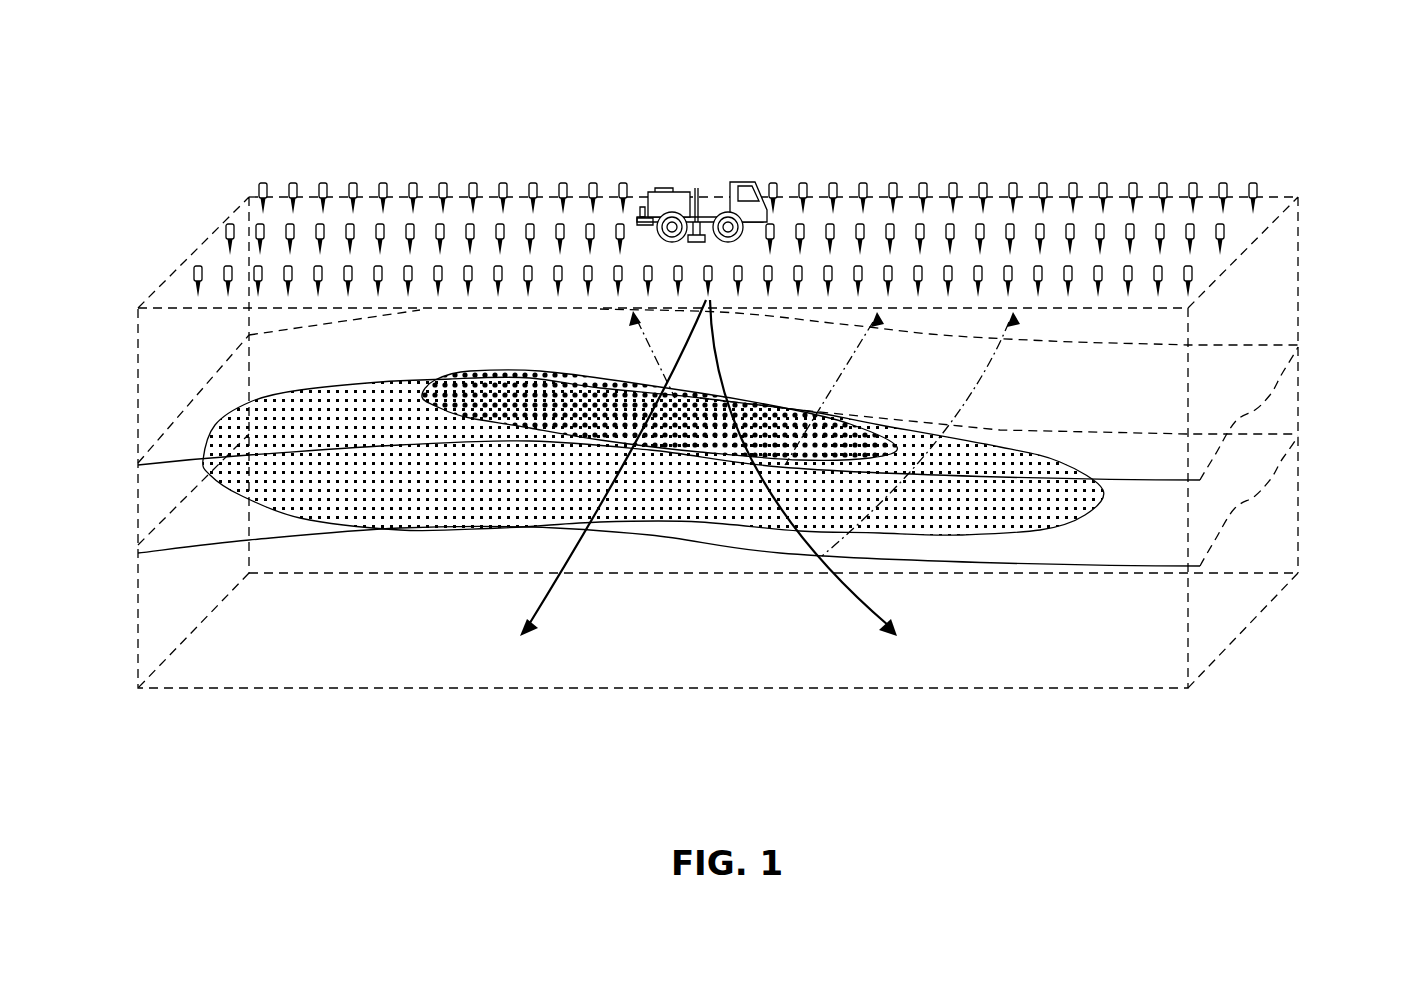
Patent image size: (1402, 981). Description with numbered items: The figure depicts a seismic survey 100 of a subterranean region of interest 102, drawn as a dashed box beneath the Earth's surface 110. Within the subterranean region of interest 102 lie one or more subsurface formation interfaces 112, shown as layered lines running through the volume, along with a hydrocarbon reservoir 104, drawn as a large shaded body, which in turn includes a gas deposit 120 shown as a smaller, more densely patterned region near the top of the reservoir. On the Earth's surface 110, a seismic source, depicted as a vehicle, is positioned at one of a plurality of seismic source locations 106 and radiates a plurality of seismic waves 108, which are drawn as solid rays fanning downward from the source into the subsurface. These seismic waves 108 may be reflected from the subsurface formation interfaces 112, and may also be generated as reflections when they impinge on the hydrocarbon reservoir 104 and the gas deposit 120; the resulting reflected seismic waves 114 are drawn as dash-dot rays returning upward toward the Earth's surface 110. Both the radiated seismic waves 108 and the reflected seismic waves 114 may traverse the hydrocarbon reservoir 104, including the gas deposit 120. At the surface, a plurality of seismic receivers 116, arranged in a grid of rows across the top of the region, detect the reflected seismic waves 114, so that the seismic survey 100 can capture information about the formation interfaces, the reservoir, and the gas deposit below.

The seismic survey 100 is at (1302, 103).
The subterranean region of interest 102 is at (1125, 652).
The hydrocarbon reservoir 104 is at (1058, 495).
The seismic source location 106 is at (670, 187).
The seismic waves 108 is at (558, 590).
The Earth's surface 110 is at (1278, 204).
The subsurface formation interface 112 is at (195, 457).
The reflected seismic waves 114 is at (853, 367).
The seismic receivers 116 is at (1106, 182).
The gas deposit 120 is at (455, 376).